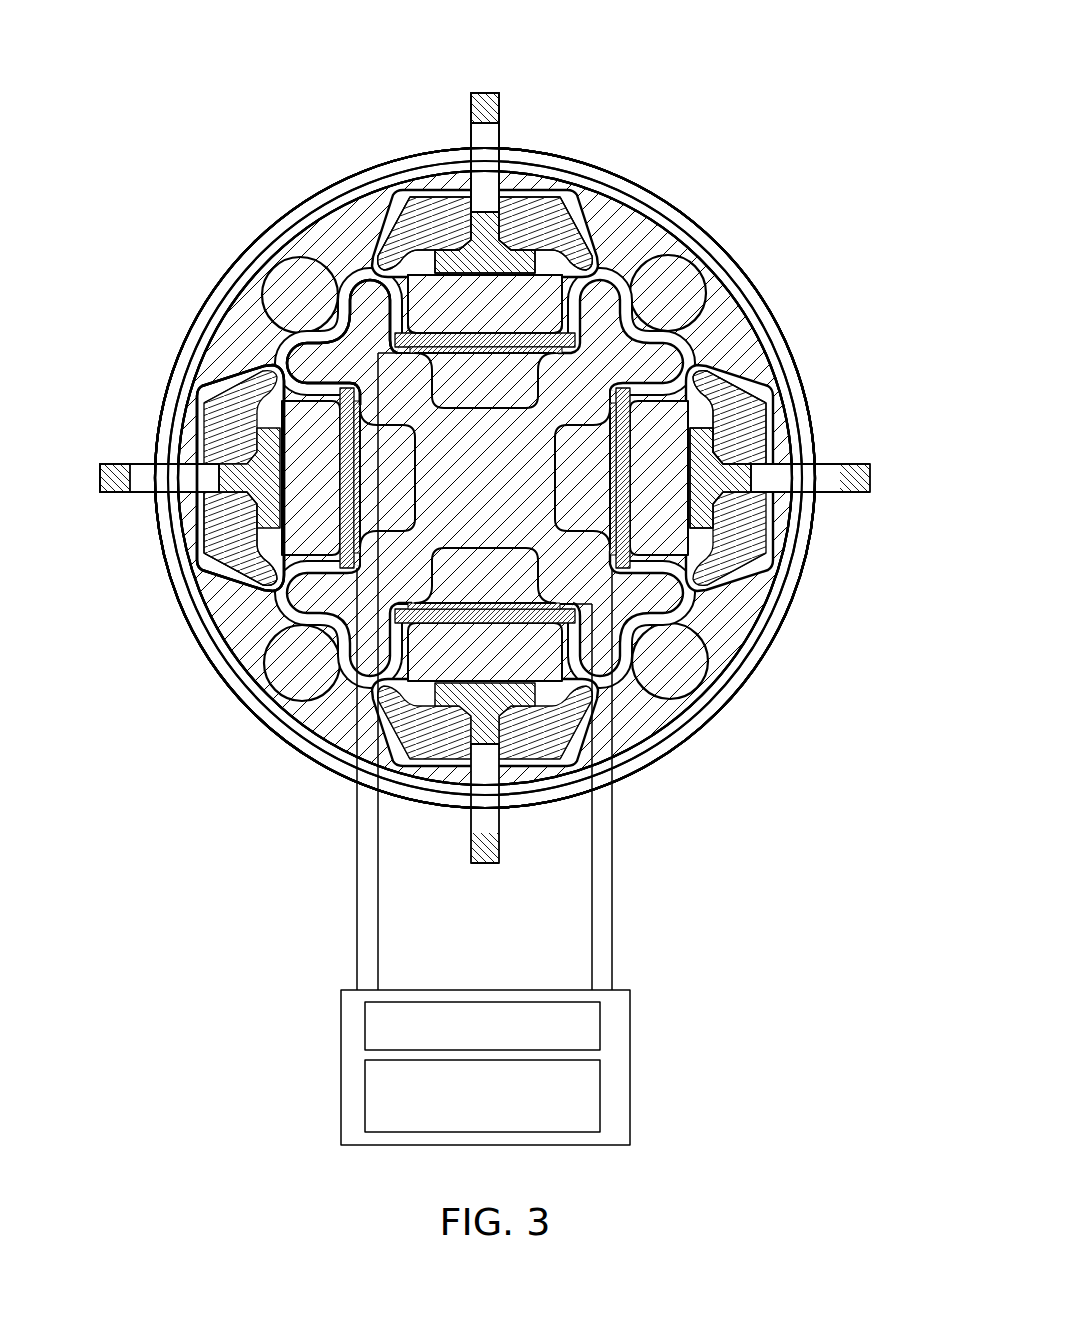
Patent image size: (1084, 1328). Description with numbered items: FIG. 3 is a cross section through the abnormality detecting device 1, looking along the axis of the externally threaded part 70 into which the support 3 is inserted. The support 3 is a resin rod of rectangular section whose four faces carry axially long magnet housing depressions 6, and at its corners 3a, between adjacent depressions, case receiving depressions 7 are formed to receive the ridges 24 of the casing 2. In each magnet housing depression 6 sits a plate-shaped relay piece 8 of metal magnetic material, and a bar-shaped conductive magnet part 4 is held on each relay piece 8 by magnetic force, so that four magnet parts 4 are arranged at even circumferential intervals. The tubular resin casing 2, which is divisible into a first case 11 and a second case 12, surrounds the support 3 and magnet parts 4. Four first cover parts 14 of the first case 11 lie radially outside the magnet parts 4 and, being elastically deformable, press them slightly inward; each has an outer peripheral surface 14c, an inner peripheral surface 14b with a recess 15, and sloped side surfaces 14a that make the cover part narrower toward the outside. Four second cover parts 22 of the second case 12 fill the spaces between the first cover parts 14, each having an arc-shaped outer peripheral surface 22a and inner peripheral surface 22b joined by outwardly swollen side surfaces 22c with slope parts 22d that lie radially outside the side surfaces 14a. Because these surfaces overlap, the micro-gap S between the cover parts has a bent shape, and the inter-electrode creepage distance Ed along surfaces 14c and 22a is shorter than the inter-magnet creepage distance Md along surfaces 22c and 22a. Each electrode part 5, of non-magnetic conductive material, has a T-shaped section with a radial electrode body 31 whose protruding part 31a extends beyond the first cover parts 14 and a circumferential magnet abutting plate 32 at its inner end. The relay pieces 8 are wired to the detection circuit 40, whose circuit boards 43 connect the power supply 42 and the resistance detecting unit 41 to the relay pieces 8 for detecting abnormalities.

The abnormality detecting device 1 is at (812, 180).
The casing 2 is at (876, 641).
The support 3 is at (352, 658).
The corners of the support 3a is at (585, 300).
The magnet parts 4 is at (452, 250).
The electrode parts 5 is at (505, 125).
The magnet housing depressions 6 is at (572, 250).
The case receiving depressions 7 is at (323, 300).
The relay piece 8 is at (400, 192).
The first case 11 is at (785, 615).
The second case 12 is at (714, 690).
The first cover parts 14 is at (780, 440).
The side surfaces of the first cover parts 14a is at (765, 578).
The inner peripheral surface of the first cover part 14b is at (250, 606).
The outer peripheral surfaces of the first cover parts 14c is at (425, 235).
The recess 15 is at (200, 408).
The second cover parts 22 is at (743, 292).
The outer peripheral surface of the second cover part 22a is at (725, 248).
The inner peripheral surface of the second cover part 22b is at (795, 378).
The side surfaces of the second cover parts 22c is at (763, 345).
The slope part 22d is at (515, 166).
The ridges 24 is at (648, 300).
The electrode body 31 is at (138, 458).
The protruding parts 31a is at (484, 92).
The magnet abutting plate 32 is at (198, 386).
The detection circuit 40 is at (341, 1068).
The resistance detecting unit 41 is at (365, 1100).
The power supply 42 is at (365, 1027).
The circuit boards 43 is at (495, 320).
The externally threaded part 70 is at (268, 228).
The inter-electrode creepage distance Ed is at (740, 188).
The inter-magnet creepage distance Md is at (258, 247).
The micro-gap S is at (495, 725).